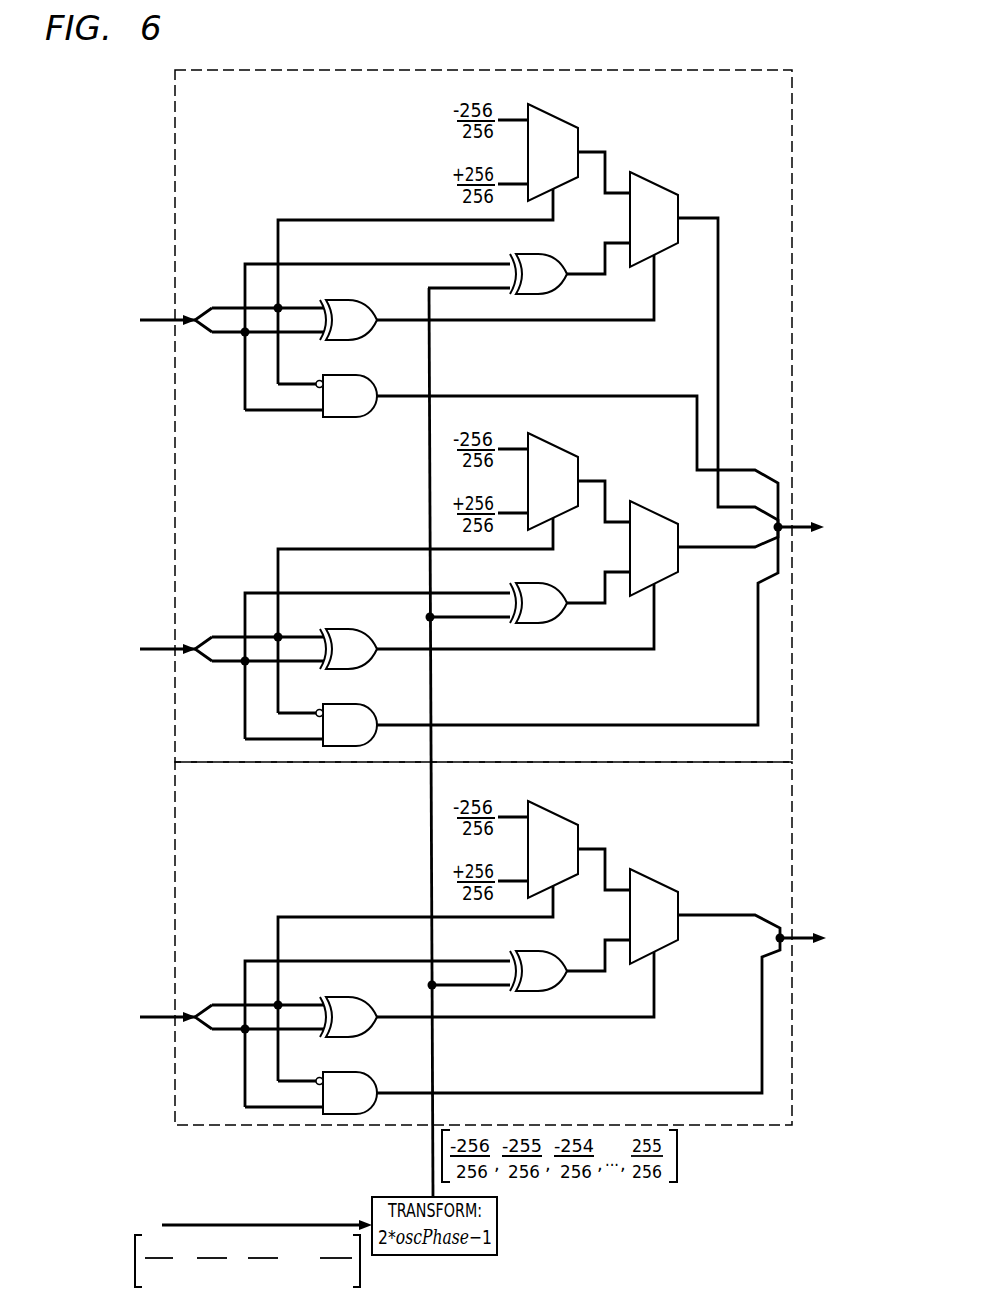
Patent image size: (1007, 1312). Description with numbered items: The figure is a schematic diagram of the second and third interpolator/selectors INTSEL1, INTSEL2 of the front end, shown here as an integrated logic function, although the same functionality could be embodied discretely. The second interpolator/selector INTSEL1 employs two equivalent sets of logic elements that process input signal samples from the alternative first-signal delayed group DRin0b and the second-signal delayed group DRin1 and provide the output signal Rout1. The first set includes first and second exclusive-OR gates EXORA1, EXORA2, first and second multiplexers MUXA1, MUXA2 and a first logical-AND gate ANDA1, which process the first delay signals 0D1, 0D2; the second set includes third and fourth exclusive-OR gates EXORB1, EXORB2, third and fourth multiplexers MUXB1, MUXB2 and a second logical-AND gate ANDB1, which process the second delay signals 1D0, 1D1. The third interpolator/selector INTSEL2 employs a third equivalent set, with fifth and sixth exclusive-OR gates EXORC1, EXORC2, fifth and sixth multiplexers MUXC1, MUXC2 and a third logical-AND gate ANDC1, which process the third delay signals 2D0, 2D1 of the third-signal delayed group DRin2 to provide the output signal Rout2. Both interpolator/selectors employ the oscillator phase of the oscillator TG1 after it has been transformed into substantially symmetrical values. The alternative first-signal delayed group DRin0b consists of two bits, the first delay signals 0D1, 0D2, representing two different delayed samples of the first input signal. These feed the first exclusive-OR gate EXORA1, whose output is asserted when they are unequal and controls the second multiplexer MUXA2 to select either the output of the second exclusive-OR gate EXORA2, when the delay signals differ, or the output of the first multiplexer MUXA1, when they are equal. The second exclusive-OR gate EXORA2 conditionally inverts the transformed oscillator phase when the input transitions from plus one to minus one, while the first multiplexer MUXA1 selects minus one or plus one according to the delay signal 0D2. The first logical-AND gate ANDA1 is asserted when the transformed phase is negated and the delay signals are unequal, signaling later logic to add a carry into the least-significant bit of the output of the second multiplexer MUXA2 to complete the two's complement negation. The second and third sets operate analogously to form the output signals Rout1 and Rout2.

The second interpolator/selector INTSEL1 is at (483, 416).
The third interpolator/selector INTSEL2 is at (483, 943).
The first multiplexer MUXA1 is at (553, 140).
The second multiplexer MUXA2 is at (653, 205).
The first exclusive-OR gate EXORA1 is at (346, 308).
The second exclusive-OR gate EXORA2 is at (536, 259).
The first logical-AND gate ANDA1 is at (346, 384).
The third multiplexer MUXB1 is at (553, 469).
The fourth multiplexer MUXB2 is at (653, 534).
The third exclusive-OR gate EXORB1 is at (346, 637).
The fourth exclusive-OR gate EXORB2 is at (536, 588).
The second logical-AND gate ANDB1 is at (346, 713).
The fifth multiplexer MUXC1 is at (553, 837).
The sixth multiplexer MUXC2 is at (653, 902).
The fifth exclusive-OR gate EXORC1 is at (346, 1005).
The sixth exclusive-OR gate EXORC2 is at (536, 956).
The third logical-AND gate ANDC1 is at (346, 1081).
The first delay signal 0D2 is at (212, 293).
The first delay signal 0D1 is at (212, 346).
The second delay signal 1D1 is at (212, 622).
The second delay signal 1D0 is at (212, 675).
The third delay signal 2D1 is at (212, 990).
The third delay signal 2D0 is at (212, 1043).
The alternative first-signal delayed group DRin0b is at (91, 320).
The second-signal delayed group DRin1 is at (91, 645).
The third-signal delayed group DRin2 is at (91, 1012).
The output signal Rout1 is at (829, 499).
The output signal Rout2 is at (830, 910).
The oscillator TG1 is at (216, 1242).